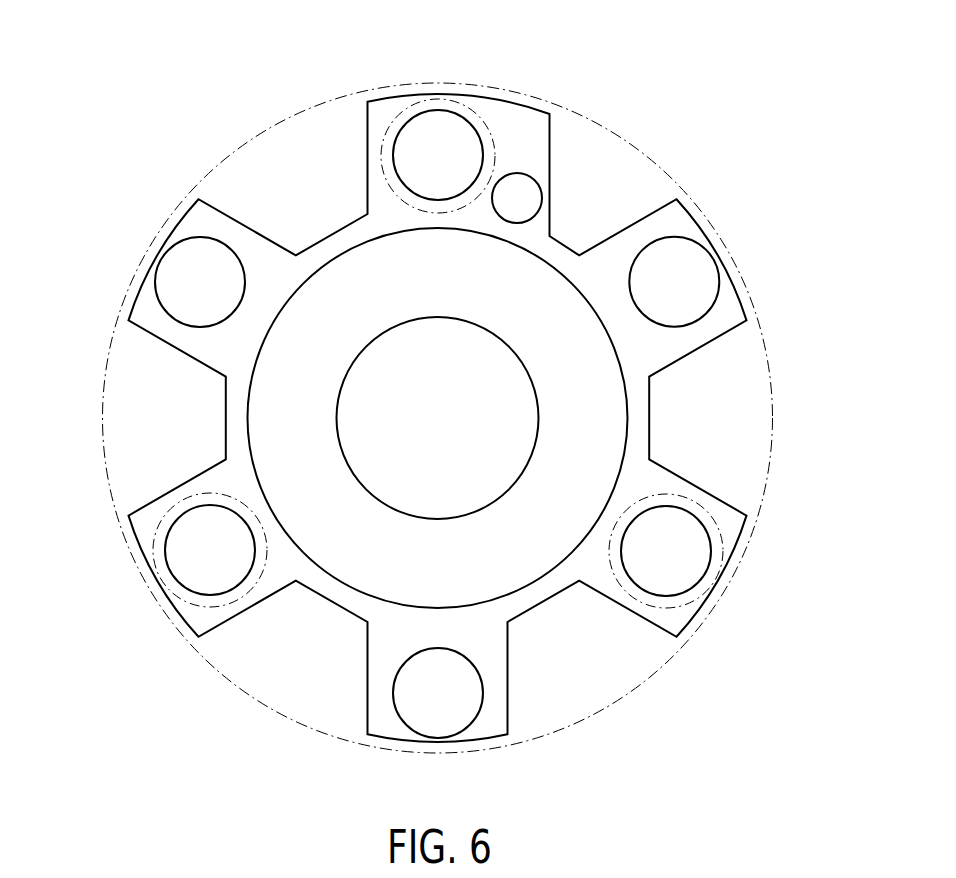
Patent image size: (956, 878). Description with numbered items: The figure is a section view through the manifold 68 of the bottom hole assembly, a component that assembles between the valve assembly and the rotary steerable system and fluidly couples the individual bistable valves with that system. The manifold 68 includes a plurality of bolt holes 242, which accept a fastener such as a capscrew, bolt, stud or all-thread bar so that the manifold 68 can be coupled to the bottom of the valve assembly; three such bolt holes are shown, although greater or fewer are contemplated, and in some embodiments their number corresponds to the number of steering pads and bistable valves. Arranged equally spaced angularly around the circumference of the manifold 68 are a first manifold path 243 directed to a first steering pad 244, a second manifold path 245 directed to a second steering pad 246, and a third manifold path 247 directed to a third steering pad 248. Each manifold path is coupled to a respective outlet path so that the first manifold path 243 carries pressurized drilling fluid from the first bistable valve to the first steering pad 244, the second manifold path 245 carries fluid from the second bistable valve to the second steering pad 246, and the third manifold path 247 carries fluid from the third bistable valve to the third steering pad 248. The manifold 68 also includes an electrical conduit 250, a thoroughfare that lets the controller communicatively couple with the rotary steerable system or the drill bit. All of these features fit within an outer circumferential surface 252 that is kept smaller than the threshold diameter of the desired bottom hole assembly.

The manifold 68 is at (185, 157).
The bolt holes 242 is at (186, 262).
The first manifold path 243 is at (652, 593).
The first steering pad 244 is at (711, 603).
The second manifold path 245 is at (215, 593).
The second steering pad 246 is at (156, 582).
The third manifold path 247 is at (468, 126).
The third steering pad 248 is at (397, 117).
The electrical conduit 250 is at (518, 195).
The outer circumferential surface 252 is at (743, 252).